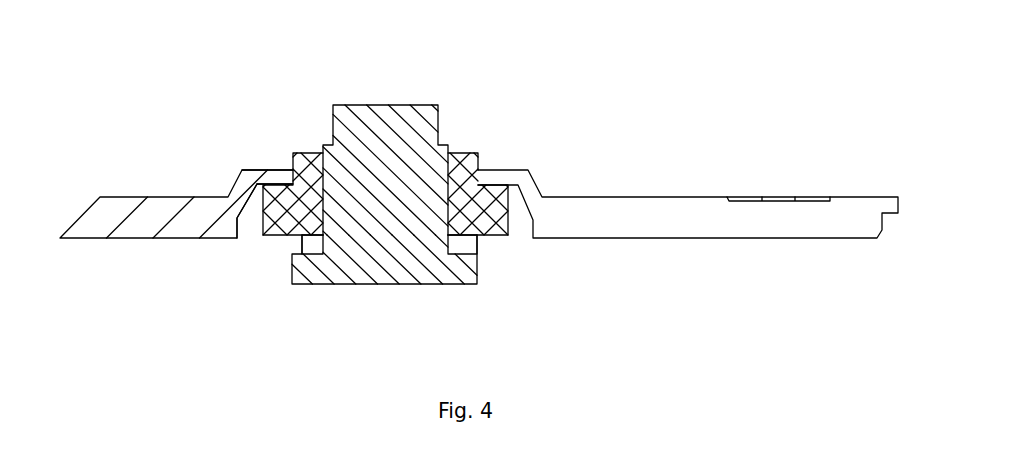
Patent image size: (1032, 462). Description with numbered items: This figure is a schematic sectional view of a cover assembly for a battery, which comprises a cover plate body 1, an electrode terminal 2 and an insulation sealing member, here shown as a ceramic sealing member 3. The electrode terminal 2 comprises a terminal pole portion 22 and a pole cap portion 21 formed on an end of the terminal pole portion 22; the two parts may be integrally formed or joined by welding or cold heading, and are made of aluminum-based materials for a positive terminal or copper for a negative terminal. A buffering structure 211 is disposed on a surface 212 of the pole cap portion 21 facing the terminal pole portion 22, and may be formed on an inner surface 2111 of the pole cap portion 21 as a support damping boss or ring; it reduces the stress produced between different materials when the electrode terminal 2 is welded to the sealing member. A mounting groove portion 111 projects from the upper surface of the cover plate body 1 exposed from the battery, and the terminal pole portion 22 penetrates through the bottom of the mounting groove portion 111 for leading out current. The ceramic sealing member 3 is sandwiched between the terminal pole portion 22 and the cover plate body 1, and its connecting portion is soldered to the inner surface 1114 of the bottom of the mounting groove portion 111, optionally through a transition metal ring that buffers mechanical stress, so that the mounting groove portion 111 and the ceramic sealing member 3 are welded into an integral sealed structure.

The cover plate body 1 is at (199, 160).
The mounting groove portion 111 is at (278, 177).
The inner surface 1114 is at (283, 175).
The electrode terminal 2 is at (428, 207).
The pole cap portion 21 is at (428, 258).
The buffering structure 211 is at (473, 245).
The inner surface 2111 is at (313, 256).
The surface 212 is at (505, 235).
The terminal pole portion 22 is at (358, 172).
The ceramic sealing member 3 is at (507, 182).